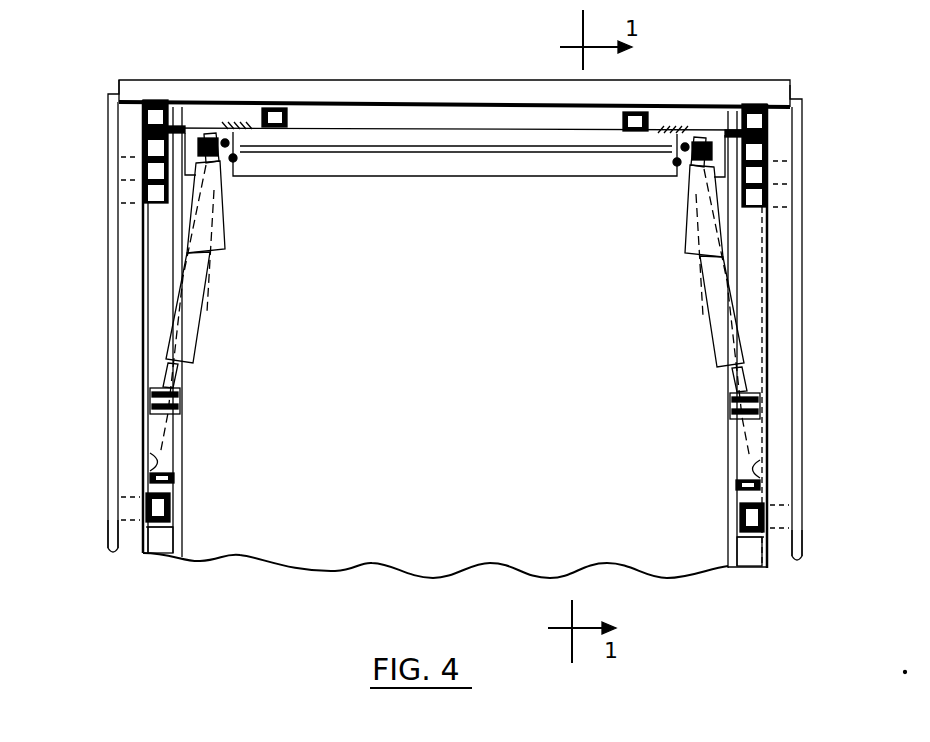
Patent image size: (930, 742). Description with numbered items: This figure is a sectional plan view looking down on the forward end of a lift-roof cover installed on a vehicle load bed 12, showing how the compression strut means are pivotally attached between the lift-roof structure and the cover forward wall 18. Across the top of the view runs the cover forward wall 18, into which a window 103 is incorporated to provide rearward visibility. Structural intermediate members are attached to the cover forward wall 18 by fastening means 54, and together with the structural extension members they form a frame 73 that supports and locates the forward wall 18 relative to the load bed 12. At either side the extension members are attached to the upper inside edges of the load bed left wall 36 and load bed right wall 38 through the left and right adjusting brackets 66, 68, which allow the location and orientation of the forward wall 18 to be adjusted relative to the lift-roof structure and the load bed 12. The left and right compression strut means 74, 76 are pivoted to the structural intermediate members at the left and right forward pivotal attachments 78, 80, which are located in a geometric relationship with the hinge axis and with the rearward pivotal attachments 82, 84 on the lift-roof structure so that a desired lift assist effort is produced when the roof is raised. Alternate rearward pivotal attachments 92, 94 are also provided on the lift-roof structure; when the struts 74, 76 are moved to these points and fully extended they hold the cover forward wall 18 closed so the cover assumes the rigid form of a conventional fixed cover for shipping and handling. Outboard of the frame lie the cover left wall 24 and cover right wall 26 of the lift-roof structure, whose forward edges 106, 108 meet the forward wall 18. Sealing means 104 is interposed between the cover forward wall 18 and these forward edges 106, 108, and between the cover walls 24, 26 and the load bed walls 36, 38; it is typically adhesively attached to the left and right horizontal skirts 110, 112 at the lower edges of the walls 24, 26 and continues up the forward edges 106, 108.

The load bed 12 is at (110, 250).
The cover forward wall 18 is at (250, 110).
The cover left wall 24 is at (118, 318).
The cover right wall 26 is at (790, 278).
The load bed left wall 36 is at (112, 405).
The load bed right wall 38 is at (800, 390).
The fastening means 54 is at (686, 126).
The left adjusting bracket 66 is at (232, 238).
The right adjusting bracket 68 is at (678, 240).
The frame 73 is at (512, 177).
The left compression strut means 74 is at (200, 306).
The right compression strut means 76 is at (708, 306).
The left forward pivotal attachment 78 is at (192, 137).
The right forward pivotal attachment 80 is at (722, 128).
The left compression strut means rearward pivotal attachment 82 is at (185, 428).
The right compression strut means rearward pivotal attachment 84 is at (745, 445).
The compression strut means rearward pivotal attachment 92 is at (145, 452).
The compression strut means rearward pivotal attachment 94 is at (728, 460).
The window 103 is at (408, 105).
The sealing means 104 is at (140, 128).
The forward edge 106 is at (136, 138).
The forward edge 108 is at (775, 145).
The left horizontal skirt 110 is at (175, 544).
The right horizontal skirt 112 is at (732, 548).